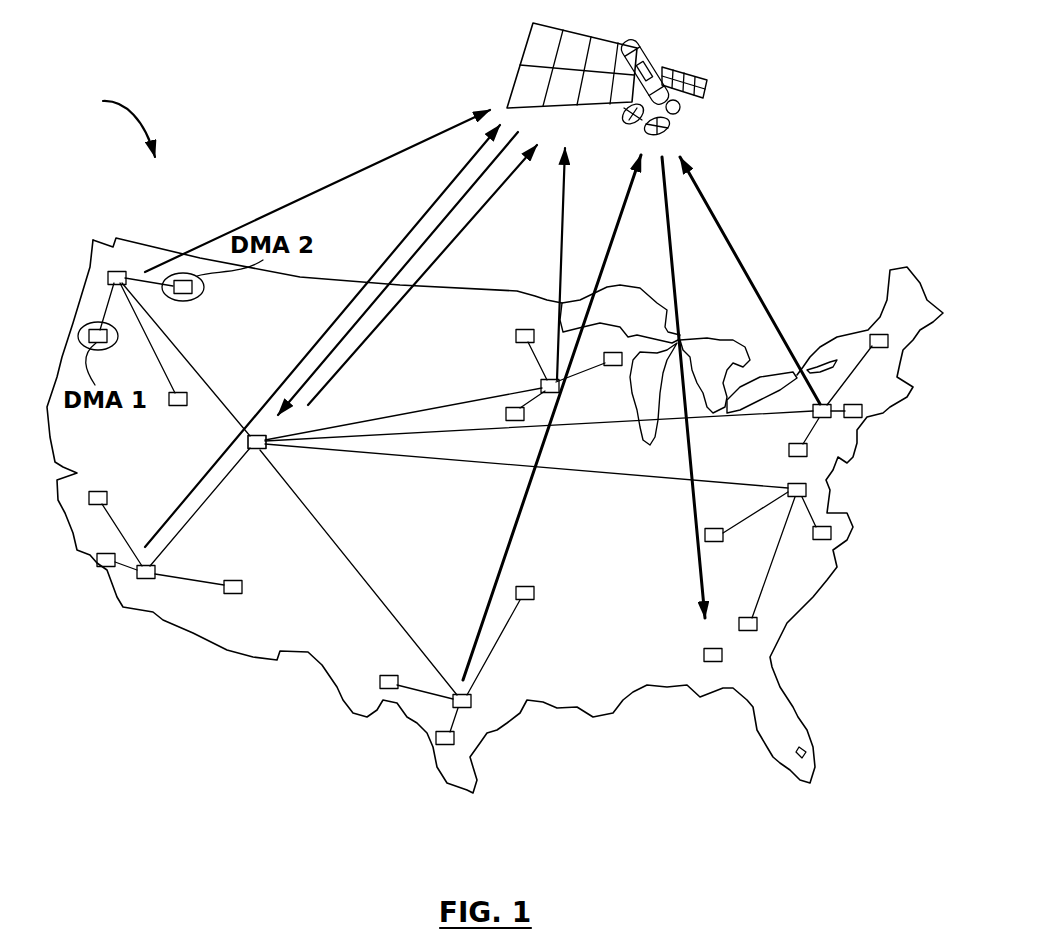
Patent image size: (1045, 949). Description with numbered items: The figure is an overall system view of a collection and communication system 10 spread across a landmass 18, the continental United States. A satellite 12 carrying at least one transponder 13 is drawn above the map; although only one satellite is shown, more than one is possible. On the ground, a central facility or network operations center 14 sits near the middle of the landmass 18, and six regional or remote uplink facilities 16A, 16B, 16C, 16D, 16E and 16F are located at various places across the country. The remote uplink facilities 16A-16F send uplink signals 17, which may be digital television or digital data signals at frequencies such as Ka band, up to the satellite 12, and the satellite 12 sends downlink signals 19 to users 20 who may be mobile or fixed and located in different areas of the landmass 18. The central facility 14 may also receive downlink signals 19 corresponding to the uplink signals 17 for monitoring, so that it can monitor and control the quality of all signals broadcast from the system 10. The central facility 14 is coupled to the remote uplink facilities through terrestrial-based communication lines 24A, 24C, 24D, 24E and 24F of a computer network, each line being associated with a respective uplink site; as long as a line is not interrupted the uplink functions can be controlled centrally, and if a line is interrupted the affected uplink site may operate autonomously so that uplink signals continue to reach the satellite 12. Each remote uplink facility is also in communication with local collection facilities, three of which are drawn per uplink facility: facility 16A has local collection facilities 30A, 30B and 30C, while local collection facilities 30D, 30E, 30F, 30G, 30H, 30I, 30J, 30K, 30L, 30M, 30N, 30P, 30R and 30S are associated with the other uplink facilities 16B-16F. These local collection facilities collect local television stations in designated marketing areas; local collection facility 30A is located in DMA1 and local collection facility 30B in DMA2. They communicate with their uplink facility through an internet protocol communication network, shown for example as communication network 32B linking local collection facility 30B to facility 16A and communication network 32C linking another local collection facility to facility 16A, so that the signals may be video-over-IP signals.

The collection and communication system 10 is at (113, 123).
The satellite 12 is at (617, 69).
The transponder 13 is at (636, 60).
The central facility or network operations center 14 is at (258, 450).
The regional or remote uplink facility 16A is at (113, 271).
The regional or remote uplink facility 16B is at (147, 581).
The regional or remote uplink facility 16C is at (542, 384).
The regional or remote uplink facility 16D is at (830, 406).
The regional or remote uplink facility 16E is at (790, 485).
The regional or remote uplink facility 16F is at (471, 700).
The uplink signals 17 is at (310, 192).
The landmass 18 is at (808, 727).
The downlink signals 19 is at (460, 203).
The users 20 is at (709, 648).
The communication line 24A is at (180, 352).
The communication line 24C is at (388, 416).
The communication line 24D is at (600, 424).
The communication line 24E is at (594, 474).
The communication line 24F is at (328, 543).
The local collection facility 30A is at (107, 336).
The local collection facility 30B is at (203, 287).
The local collection facility 30C is at (178, 405).
The local collection facility 30D is at (98, 491).
The local collection facility 30E is at (236, 594).
The local collection facility 30F is at (95, 563).
The local collection facility 30G is at (516, 335).
The local collection facility 30H is at (611, 366).
The local collection facility 30I is at (517, 421).
The local collection facility 30J is at (391, 675).
The local collection facility 30K is at (528, 586).
The local collection facility 30L is at (436, 738).
The local collection facility 30M is at (870, 340).
The local collection facility 30N is at (855, 419).
The local collection facility 30P is at (789, 451).
The local collection facility 30R is at (758, 625).
The local collection facility 30S is at (714, 543).
The communication network 32B is at (138, 277).
The communication network 32C is at (168, 372).